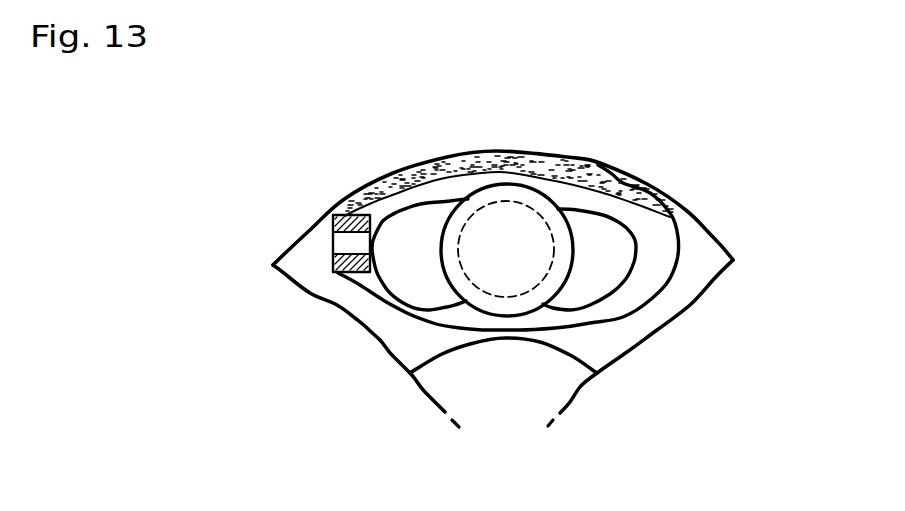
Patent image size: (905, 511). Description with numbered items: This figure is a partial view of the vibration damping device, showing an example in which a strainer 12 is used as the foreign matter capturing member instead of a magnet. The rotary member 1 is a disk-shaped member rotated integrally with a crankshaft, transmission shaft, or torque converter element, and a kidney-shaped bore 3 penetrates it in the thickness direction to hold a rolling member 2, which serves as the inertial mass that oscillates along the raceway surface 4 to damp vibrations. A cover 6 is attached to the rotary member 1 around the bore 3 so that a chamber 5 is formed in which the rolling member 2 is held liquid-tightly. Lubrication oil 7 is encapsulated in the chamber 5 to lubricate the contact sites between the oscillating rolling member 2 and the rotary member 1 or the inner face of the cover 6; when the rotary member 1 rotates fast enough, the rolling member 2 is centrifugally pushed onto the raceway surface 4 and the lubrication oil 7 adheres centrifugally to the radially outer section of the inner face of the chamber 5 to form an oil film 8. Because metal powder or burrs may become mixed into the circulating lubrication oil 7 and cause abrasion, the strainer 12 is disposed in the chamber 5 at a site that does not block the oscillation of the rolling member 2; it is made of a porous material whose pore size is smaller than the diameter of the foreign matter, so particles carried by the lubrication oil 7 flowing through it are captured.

The rotary member 1 is at (627, 323).
The rolling member 2 is at (575, 249).
The bore 3 is at (410, 290).
The raceway surface 4 is at (573, 221).
The chamber 5 is at (553, 312).
The cover 6 is at (665, 272).
The lubrication oil 7 is at (645, 192).
The oil film 8 is at (437, 182).
The strainer 12 is at (354, 215).